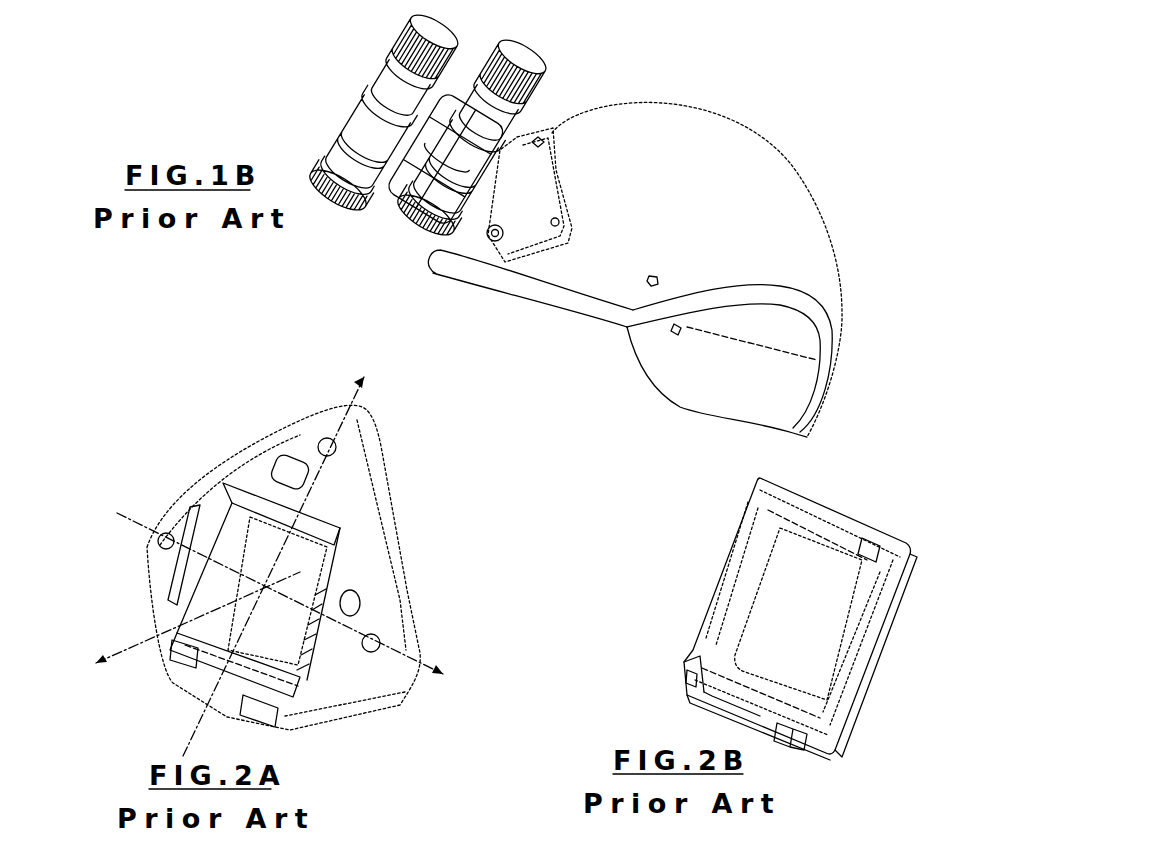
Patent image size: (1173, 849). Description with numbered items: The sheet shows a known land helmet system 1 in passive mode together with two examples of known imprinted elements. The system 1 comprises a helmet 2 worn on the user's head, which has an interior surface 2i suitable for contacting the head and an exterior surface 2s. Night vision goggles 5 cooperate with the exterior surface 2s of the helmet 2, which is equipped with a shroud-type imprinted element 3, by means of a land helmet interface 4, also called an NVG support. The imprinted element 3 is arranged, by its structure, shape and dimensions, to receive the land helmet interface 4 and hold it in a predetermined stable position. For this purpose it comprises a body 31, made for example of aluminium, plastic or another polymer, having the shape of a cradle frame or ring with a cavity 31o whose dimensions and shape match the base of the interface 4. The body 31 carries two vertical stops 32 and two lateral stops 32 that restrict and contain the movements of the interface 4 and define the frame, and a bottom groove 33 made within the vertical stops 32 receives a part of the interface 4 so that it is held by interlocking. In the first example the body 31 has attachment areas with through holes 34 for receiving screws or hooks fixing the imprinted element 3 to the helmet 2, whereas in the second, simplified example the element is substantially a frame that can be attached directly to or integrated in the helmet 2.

In FIG. 1B, the system 1 is at (268, 114).
In FIG. 1B, the helmet 2 is at (832, 185).
In FIG. 1B, the exterior surface 2s is at (752, 165).
In FIG. 1B, the interior surface 2i is at (782, 390).
In FIG. 1B, the imprinted element 3 is at (552, 133).
In FIG. 2A, the imprinted element 3 is at (423, 543).
In FIG. 2B, the imprinted element 3 is at (653, 534).
In FIG. 1B, the land helmet interface 4 is at (493, 233).
In FIG. 1B, the night vision goggles 5 is at (403, 167).
In FIG. 2A, the body 31 is at (307, 681).
In FIG. 2B, the body 31 is at (830, 707).
In FIG. 2A, the cavity 31o is at (250, 628).
In FIG. 2B, the cavity 31o is at (823, 617).
In FIG. 2A, the vertical stops and lateral stops 32 is at (260, 492).
In FIG. 2B, the vertical stops and lateral stops 32 is at (777, 502).
In FIG. 2A, the bottom groove 33 is at (223, 672).
In FIG. 2B, the bottom groove 33 is at (750, 692).
In FIG. 2A, the through holes 34 is at (332, 445).